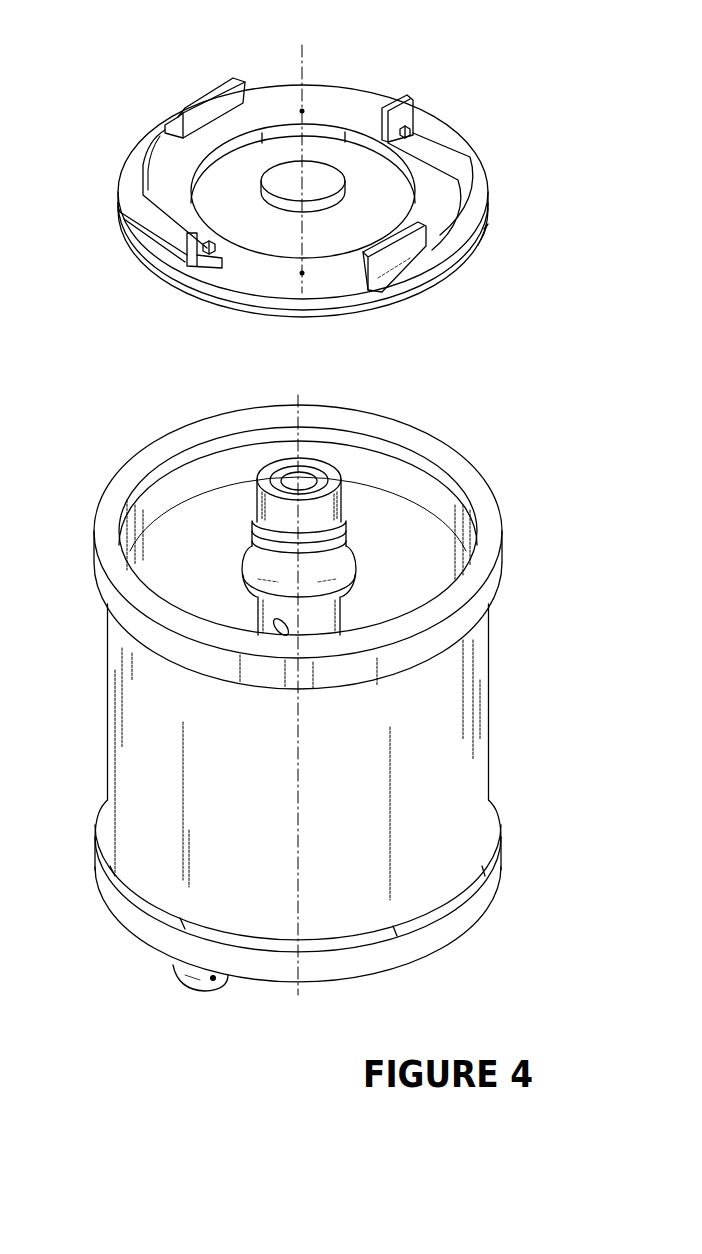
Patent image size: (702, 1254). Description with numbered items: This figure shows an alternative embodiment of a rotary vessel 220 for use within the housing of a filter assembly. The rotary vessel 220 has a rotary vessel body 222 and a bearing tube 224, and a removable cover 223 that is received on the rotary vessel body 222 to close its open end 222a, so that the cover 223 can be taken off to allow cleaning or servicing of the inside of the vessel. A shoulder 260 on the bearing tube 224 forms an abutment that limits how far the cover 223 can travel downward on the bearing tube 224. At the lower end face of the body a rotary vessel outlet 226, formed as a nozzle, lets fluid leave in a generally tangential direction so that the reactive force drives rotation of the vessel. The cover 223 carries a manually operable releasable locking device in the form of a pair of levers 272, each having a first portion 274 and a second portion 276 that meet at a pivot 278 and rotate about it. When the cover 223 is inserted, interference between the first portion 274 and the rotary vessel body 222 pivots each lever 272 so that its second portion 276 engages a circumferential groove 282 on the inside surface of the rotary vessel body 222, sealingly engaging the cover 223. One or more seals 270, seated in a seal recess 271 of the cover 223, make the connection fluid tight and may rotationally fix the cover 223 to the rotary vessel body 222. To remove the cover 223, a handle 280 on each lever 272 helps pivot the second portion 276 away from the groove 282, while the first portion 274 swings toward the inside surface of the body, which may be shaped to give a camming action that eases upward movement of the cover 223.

The rotary vessel 220 is at (508, 361).
The rotary vessel body 222 is at (463, 722).
The open end 222a is at (465, 520).
The cover 223 is at (350, 118).
The bearing tube 224 is at (318, 461).
The rotary vessel outlet 226 is at (215, 980).
The shoulder 260 is at (348, 527).
The seal 270 is at (260, 311).
The seal recess 271 is at (219, 301).
The lever 272 is at (120, 211).
The first portion 274 is at (406, 98).
The second portion 276 is at (141, 160).
The pivot 278 is at (409, 130).
The handle 280 is at (215, 110).
The circumferential groove 282 is at (163, 467).